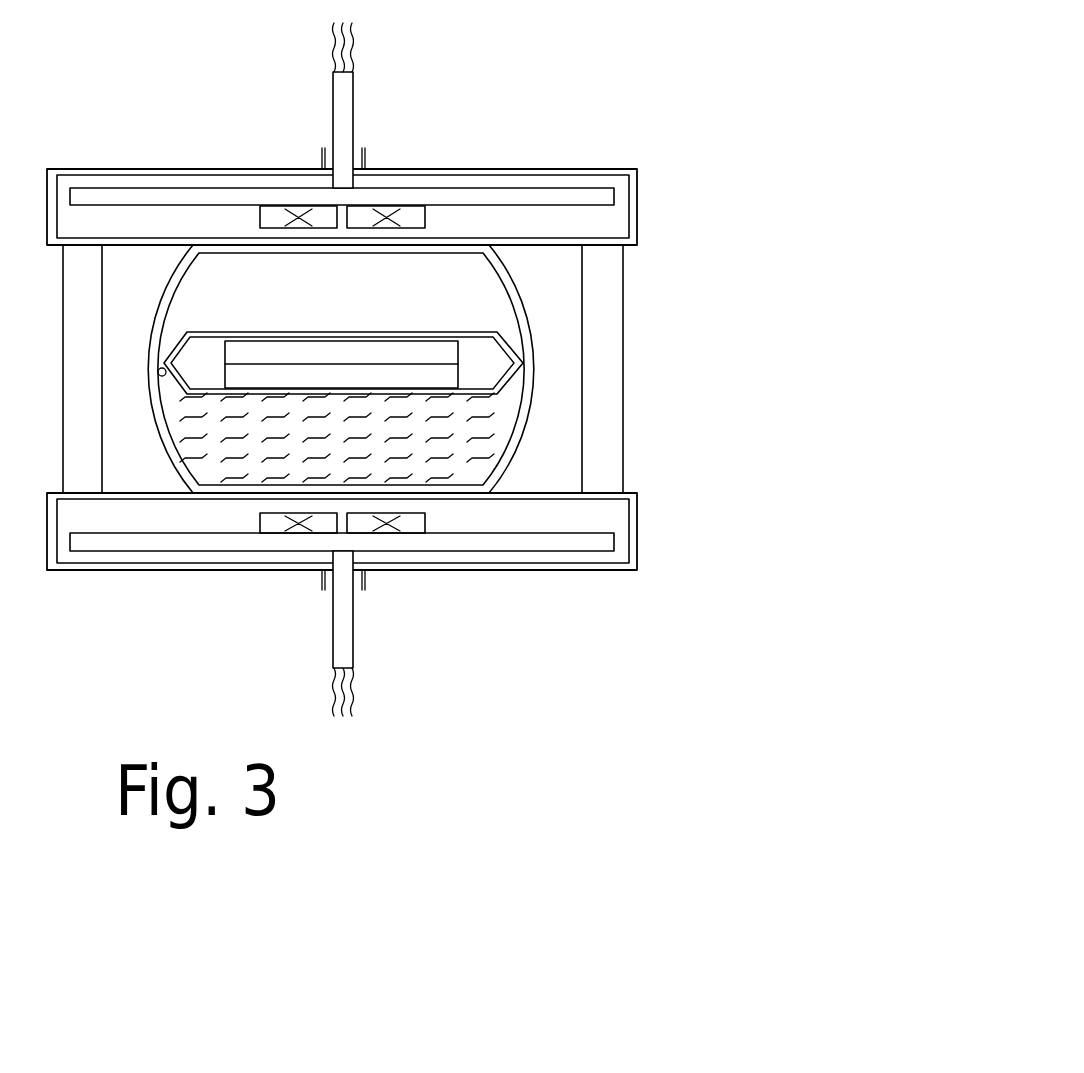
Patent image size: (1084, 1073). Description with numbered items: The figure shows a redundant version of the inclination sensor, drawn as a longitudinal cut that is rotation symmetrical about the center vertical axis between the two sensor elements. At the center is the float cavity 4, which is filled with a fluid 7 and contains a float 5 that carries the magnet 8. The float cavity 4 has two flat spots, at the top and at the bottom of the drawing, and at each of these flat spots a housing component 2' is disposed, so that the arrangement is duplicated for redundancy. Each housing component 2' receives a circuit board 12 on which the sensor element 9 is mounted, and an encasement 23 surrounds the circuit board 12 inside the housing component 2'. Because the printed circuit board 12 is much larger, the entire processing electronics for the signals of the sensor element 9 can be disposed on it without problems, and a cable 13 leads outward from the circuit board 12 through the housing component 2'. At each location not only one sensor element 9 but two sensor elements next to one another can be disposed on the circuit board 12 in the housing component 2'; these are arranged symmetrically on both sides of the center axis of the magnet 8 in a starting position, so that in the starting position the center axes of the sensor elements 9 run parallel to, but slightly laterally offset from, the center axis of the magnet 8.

The housing component 2' is at (396, 335).
The float cavity 4 is at (527, 317).
The float 5 is at (478, 368).
The fluid 7 is at (453, 452).
The magnet 8 is at (367, 379).
The sensor element 9 is at (405, 218).
The circuit board 12 is at (602, 198).
The cable 13 is at (345, 106).
The encasement 23 is at (623, 186).